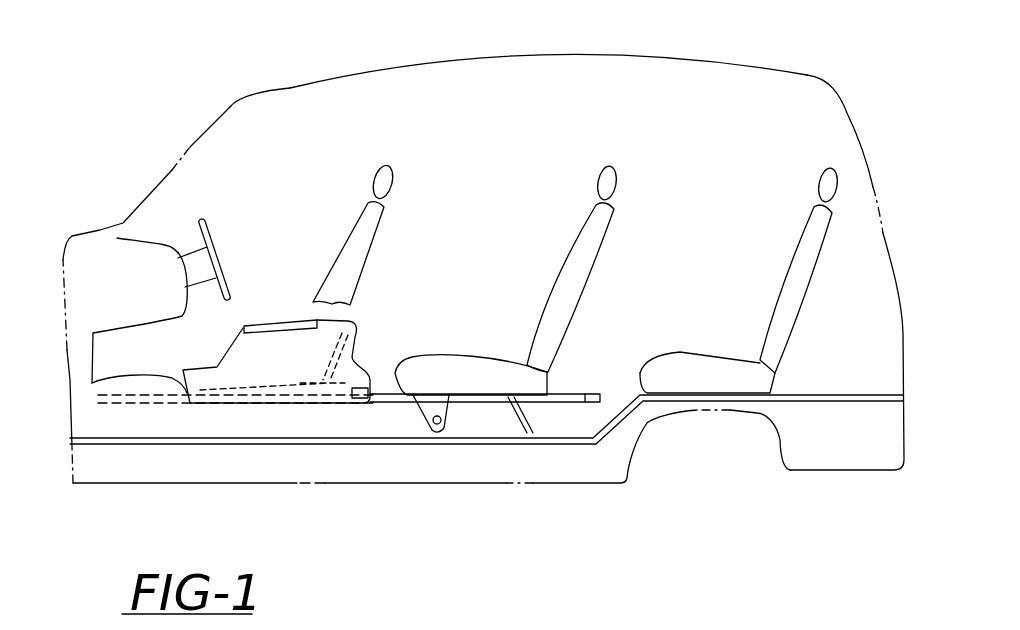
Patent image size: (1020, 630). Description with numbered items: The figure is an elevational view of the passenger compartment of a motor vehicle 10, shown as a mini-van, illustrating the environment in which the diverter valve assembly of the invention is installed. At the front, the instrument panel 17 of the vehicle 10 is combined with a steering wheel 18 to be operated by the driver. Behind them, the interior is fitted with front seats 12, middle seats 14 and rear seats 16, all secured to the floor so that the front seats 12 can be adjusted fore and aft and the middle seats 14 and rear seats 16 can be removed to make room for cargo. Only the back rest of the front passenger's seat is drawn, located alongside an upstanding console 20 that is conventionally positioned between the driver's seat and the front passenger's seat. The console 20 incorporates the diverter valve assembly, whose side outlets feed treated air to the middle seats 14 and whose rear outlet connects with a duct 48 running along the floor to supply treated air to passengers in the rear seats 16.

The motor vehicle 10 is at (722, 52).
The front seats 12 is at (415, 187).
The middle seats 14 is at (630, 180).
The rear seats 16 is at (828, 153).
The instrument panel 17 is at (143, 238).
The steering wheel 18 is at (210, 230).
The console 20 is at (277, 300).
The duct 48 is at (480, 402).